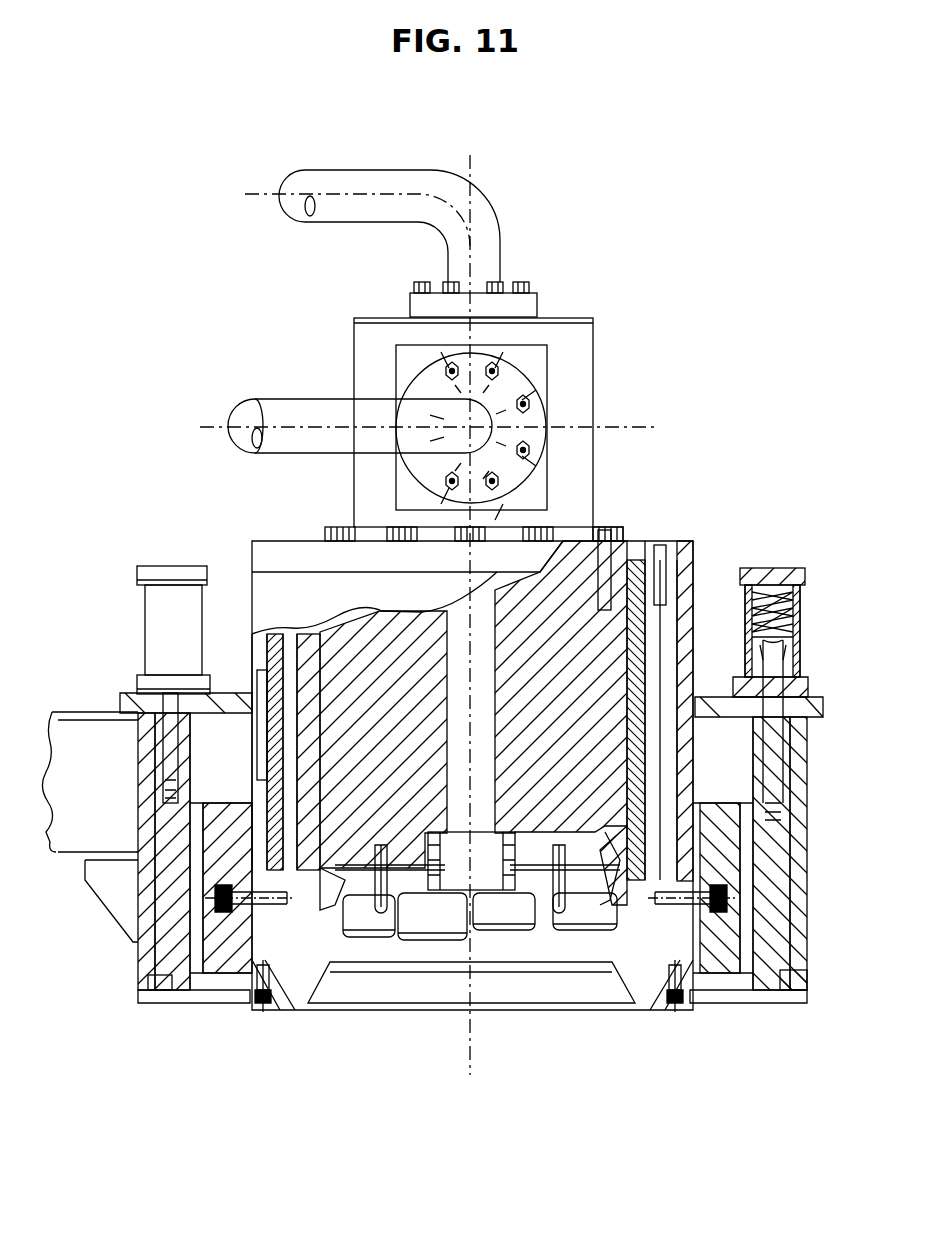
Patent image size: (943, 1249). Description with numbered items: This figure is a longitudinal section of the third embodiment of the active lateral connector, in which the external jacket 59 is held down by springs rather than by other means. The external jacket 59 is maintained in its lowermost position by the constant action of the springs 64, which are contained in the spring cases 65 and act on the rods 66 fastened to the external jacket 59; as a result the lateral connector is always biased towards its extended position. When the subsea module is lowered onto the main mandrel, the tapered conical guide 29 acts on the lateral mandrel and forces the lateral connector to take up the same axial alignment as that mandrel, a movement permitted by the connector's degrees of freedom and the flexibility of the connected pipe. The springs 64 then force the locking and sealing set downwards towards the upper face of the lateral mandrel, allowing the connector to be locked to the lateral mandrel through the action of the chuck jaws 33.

The tapered conical guide 29 is at (627, 975).
The chuck jaws 33 is at (617, 930).
The external jacket 59 is at (775, 954).
The springs 64 is at (803, 608).
The spring cases 65 is at (145, 615).
The rods 66 is at (770, 752).